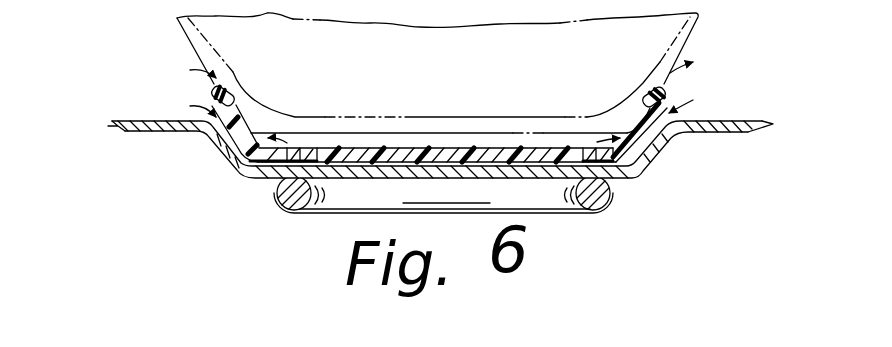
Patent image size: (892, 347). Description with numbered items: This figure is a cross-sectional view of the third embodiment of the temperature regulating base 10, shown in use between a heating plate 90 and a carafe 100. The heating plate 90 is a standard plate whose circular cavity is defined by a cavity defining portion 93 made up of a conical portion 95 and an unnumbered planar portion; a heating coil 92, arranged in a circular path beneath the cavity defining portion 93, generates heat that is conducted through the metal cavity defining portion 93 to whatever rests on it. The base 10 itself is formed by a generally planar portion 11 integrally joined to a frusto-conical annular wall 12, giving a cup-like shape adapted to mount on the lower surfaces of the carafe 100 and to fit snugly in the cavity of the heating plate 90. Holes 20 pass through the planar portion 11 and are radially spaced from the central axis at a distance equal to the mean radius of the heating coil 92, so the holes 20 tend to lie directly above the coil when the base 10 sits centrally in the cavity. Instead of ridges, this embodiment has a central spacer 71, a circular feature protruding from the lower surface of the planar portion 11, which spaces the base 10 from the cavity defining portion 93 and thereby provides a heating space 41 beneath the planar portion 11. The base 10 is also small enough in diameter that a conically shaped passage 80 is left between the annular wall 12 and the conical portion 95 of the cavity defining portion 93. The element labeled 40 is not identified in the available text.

The temperature regulating base 10 is at (162, 85).
The planar portion 11 is at (315, 133).
The annular wall 12 is at (237, 124).
The holes 20 is at (296, 160).
The support plate 40 is at (457, 142).
The heating space 41 is at (272, 162).
The central spacer 71 is at (547, 149).
The conically shaped passage 80 is at (234, 130).
The heating plate 90 is at (708, 113).
The heating coil 92 is at (557, 204).
The cavity defining portion 93 is at (663, 166).
The conical portion 95 is at (238, 163).
The carafe 100 is at (692, 20).